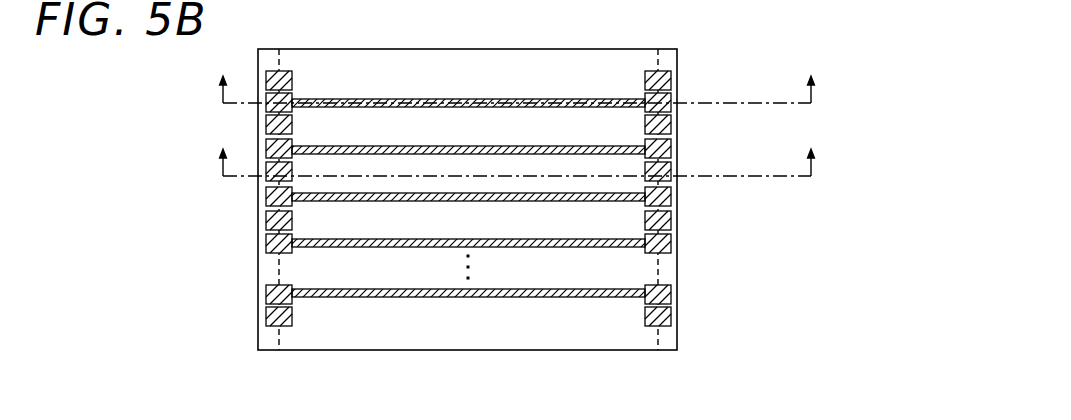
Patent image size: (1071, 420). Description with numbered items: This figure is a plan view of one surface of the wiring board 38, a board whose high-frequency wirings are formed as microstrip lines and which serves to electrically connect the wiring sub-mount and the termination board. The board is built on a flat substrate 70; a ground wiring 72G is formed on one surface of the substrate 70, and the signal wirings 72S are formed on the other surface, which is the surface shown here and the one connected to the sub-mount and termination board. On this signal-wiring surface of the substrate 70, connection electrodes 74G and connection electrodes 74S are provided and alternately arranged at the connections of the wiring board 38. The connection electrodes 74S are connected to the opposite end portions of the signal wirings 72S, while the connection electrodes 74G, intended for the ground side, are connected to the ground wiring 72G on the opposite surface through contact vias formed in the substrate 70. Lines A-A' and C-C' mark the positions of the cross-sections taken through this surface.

The wiring board 38 is at (640, 403).
The substrate 70 is at (677, 333).
The ground wiring 72G is at (658, 55).
The signal wirings 72S is at (340, 99).
The connection electrodes 74G is at (671, 73).
The connection electrodes 74S is at (671, 96).